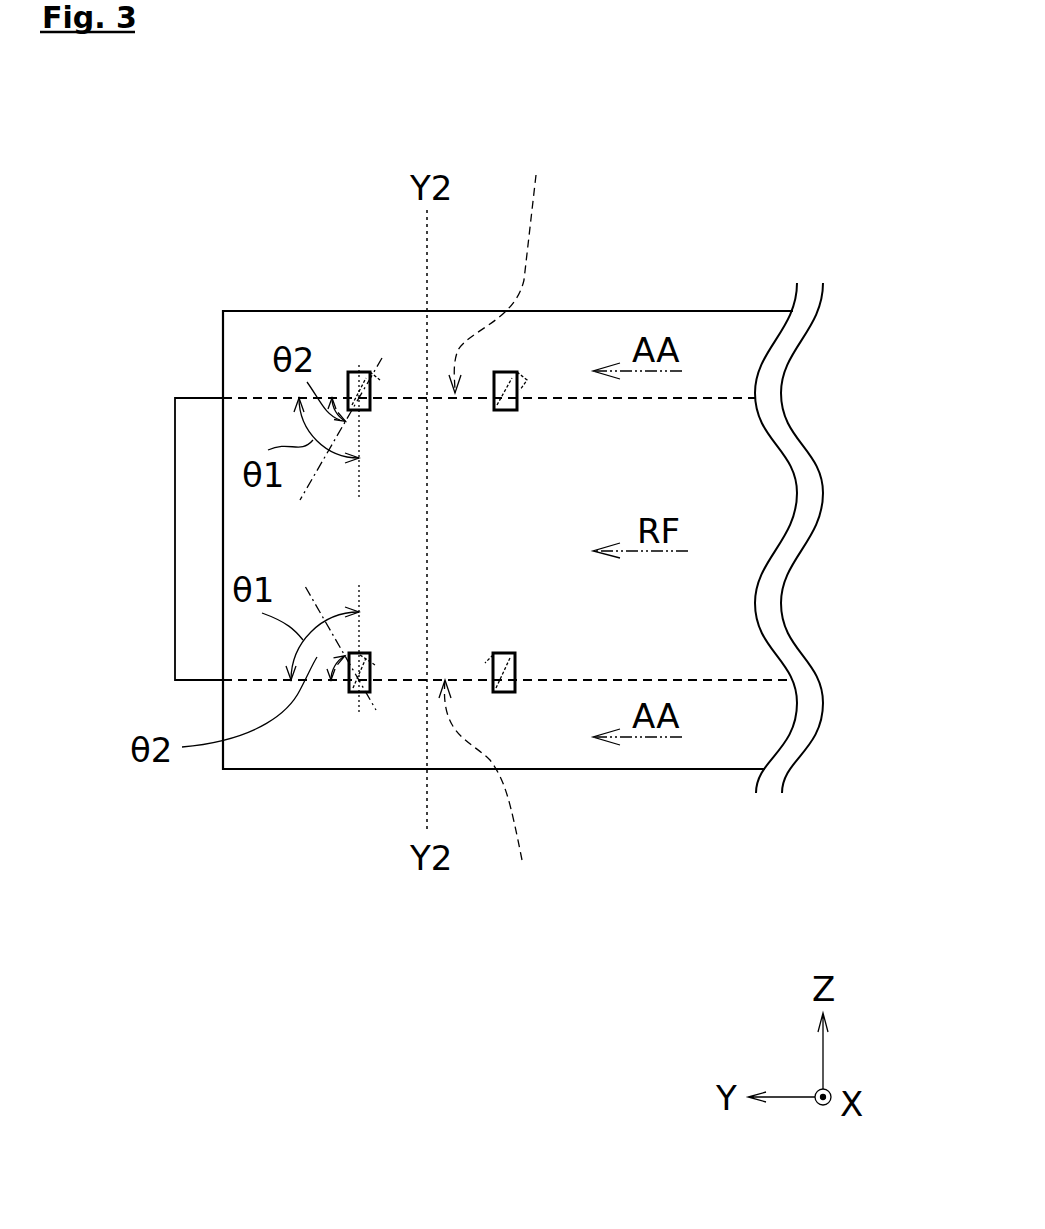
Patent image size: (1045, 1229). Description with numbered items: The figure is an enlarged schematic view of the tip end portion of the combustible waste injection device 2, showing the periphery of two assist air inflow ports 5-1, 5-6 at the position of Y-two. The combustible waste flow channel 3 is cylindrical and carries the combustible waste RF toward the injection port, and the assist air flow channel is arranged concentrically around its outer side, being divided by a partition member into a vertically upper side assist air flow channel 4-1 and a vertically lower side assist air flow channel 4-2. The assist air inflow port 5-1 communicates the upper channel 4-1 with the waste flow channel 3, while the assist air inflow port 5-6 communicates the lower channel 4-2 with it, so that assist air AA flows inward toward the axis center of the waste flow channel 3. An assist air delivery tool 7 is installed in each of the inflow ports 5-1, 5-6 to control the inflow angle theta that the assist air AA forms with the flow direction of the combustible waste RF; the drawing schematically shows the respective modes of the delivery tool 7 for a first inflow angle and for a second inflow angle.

The combustible waste injection device 2 is at (178, 172).
The combustible waste flow channel 3 is at (747, 503).
The vertically upper side assist air flow channel 4-1 is at (750, 337).
The vertically lower side assist air flow channel 4-2 is at (755, 727).
The assist air inflow port 5-1 is at (512, 259).
The assist air inflow port 5-6 is at (495, 815).
The assist air delivery tool 7 is at (517, 372).